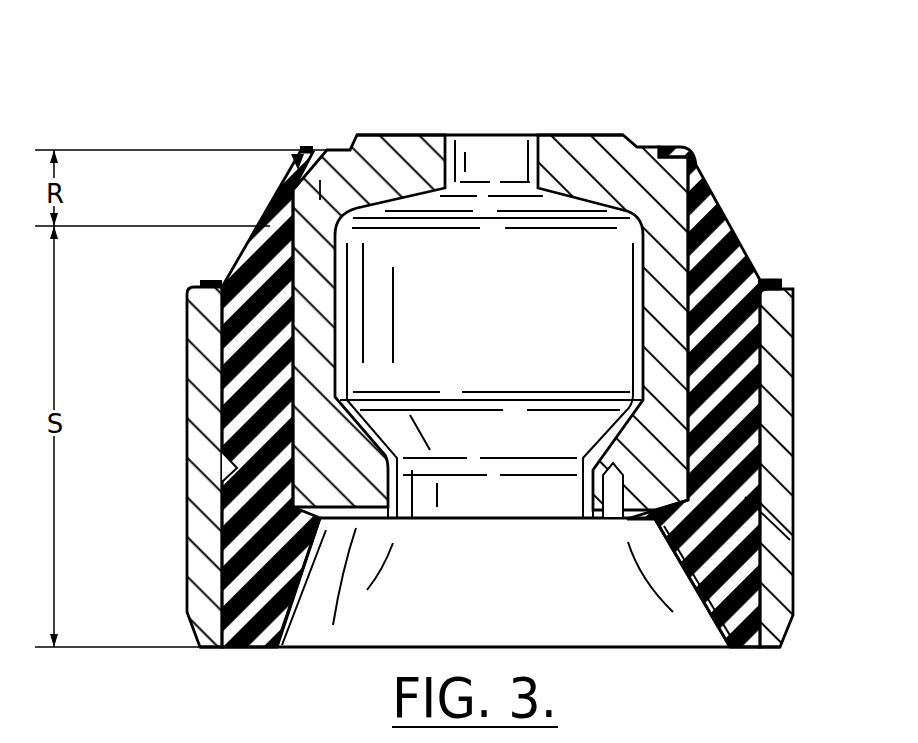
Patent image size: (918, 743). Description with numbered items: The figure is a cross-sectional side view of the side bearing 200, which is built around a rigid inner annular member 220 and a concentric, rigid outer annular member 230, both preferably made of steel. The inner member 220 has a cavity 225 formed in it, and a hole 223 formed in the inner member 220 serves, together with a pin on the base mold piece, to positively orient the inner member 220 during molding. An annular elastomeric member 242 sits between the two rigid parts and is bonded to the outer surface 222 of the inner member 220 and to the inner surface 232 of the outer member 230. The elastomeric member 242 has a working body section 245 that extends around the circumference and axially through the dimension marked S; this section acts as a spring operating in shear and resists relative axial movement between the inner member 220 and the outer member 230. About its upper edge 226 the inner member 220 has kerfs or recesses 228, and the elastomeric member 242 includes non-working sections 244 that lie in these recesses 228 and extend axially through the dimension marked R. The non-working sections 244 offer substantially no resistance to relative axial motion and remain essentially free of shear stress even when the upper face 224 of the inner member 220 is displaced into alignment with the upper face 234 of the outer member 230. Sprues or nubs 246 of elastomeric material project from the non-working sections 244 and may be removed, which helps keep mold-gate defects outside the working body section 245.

The side bearing 200 is at (729, 86).
The inner annular member 220 is at (665, 267).
The outer surface 222 is at (305, 355).
The hole 223 is at (621, 520).
The upper face 224 is at (583, 135).
The cavity 225 is at (491, 362).
The upper edge 226 is at (688, 158).
The recess 228 is at (320, 200).
The outer annular member 230 is at (780, 457).
The inner surface 232 is at (220, 490).
The upper face 234 is at (790, 288).
The elastomeric member 242 is at (743, 500).
The non-working section 244 is at (300, 160).
The working body section 245 is at (235, 522).
The sprue 246 is at (309, 146).